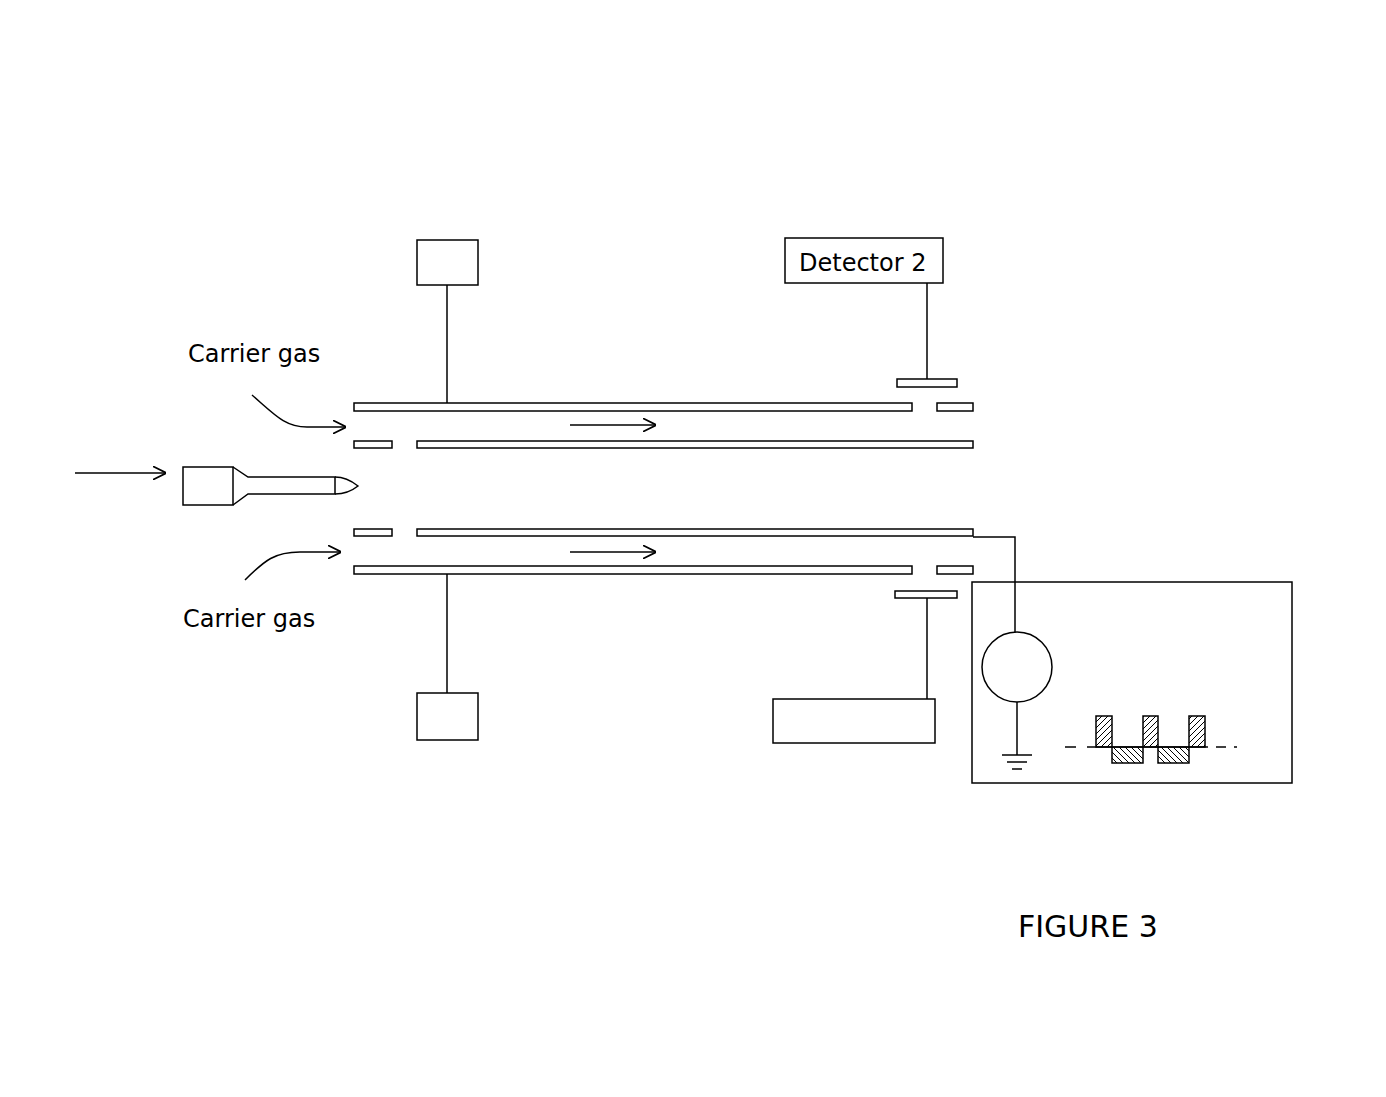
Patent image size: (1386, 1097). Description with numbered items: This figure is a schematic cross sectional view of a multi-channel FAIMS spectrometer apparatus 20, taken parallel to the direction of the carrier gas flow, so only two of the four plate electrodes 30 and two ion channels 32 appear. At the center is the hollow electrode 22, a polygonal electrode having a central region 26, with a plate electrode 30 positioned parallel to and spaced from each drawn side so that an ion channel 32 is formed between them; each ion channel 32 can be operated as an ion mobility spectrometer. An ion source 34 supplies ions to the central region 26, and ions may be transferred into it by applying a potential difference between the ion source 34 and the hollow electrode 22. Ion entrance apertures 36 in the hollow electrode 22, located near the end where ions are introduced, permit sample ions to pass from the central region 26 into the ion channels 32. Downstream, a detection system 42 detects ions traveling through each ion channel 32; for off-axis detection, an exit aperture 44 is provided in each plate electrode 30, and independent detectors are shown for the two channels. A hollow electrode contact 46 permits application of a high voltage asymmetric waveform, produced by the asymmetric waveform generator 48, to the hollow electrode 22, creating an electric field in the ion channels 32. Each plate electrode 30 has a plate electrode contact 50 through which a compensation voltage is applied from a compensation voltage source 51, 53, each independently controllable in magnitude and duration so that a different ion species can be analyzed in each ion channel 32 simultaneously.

The apparatus 20 is at (1075, 207).
The hollow electrode 22 is at (737, 442).
The central region 26 is at (510, 488).
The plate electrode 30 is at (683, 405).
The ion channel 32 is at (463, 430).
The ion source 34 is at (190, 505).
The ion entrance aperture 36 is at (400, 537).
The detection system 42 is at (908, 599).
The exit aperture 44 is at (920, 572).
The hollow electrode contact 46 is at (993, 537).
The asymmetric waveform generator 48 is at (1292, 670).
The plate electrode contact 50 is at (447, 598).
The compensation voltage source 51 is at (420, 240).
The compensation voltage source 53 is at (425, 740).